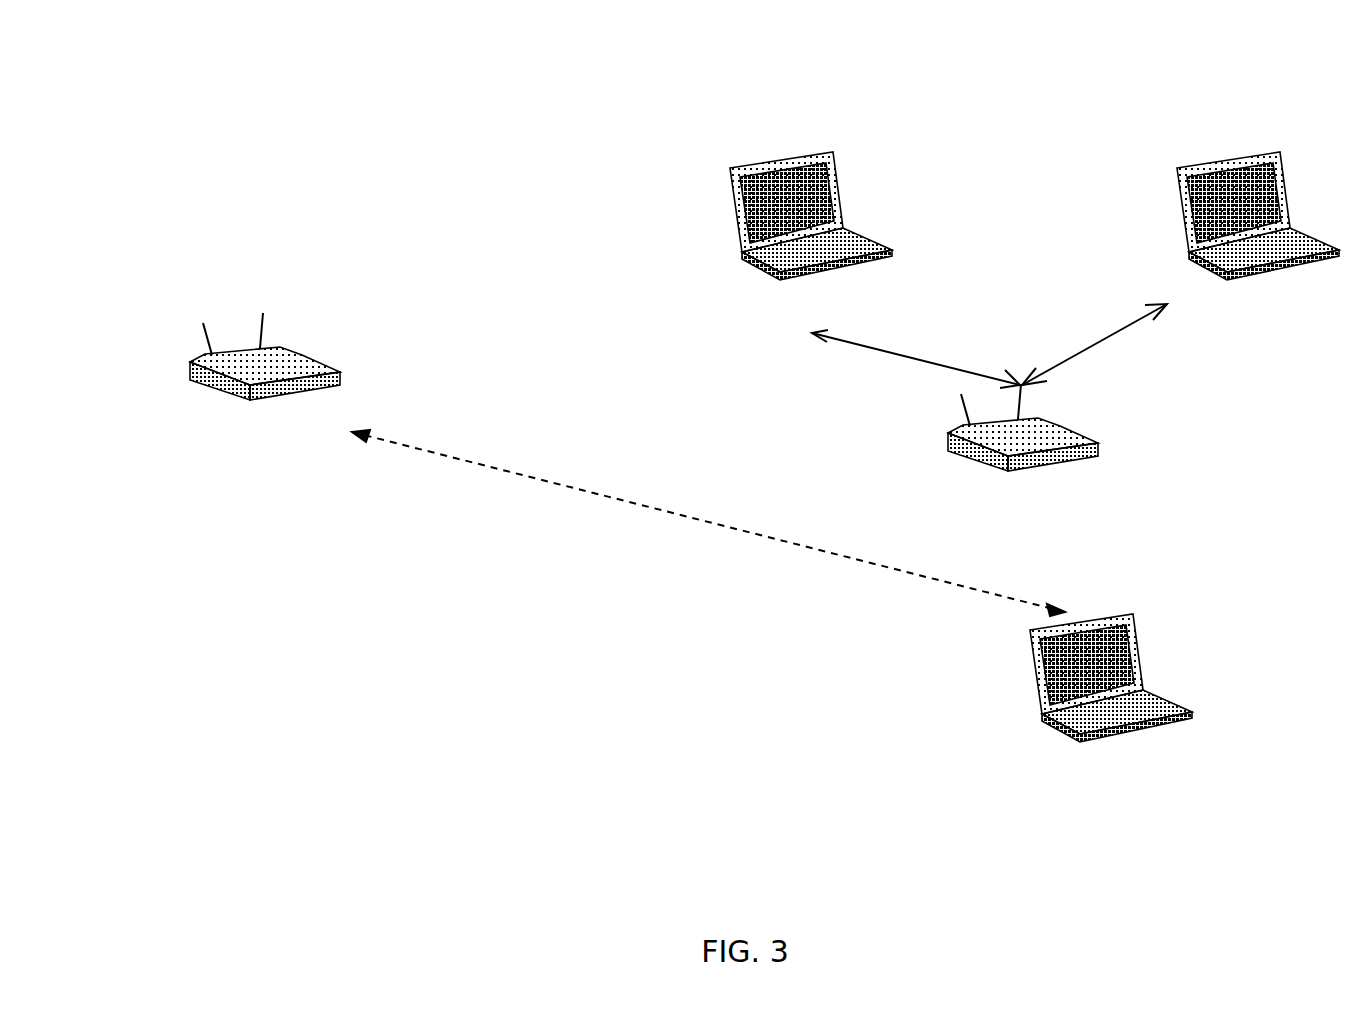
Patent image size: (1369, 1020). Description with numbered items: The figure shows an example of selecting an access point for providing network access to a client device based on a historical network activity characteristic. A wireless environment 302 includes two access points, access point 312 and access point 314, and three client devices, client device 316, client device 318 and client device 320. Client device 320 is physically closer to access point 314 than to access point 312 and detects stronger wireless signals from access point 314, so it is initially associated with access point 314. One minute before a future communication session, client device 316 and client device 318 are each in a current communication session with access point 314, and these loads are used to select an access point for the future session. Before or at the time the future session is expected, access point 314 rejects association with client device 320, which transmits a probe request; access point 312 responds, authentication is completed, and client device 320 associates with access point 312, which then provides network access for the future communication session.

The wireless environment 302 is at (357, 116).
The access point 312 is at (264, 387).
The access point 314 is at (1022, 458).
The client device 316 is at (810, 241).
The client device 318 is at (1257, 241).
The client device 320 is at (1112, 702).